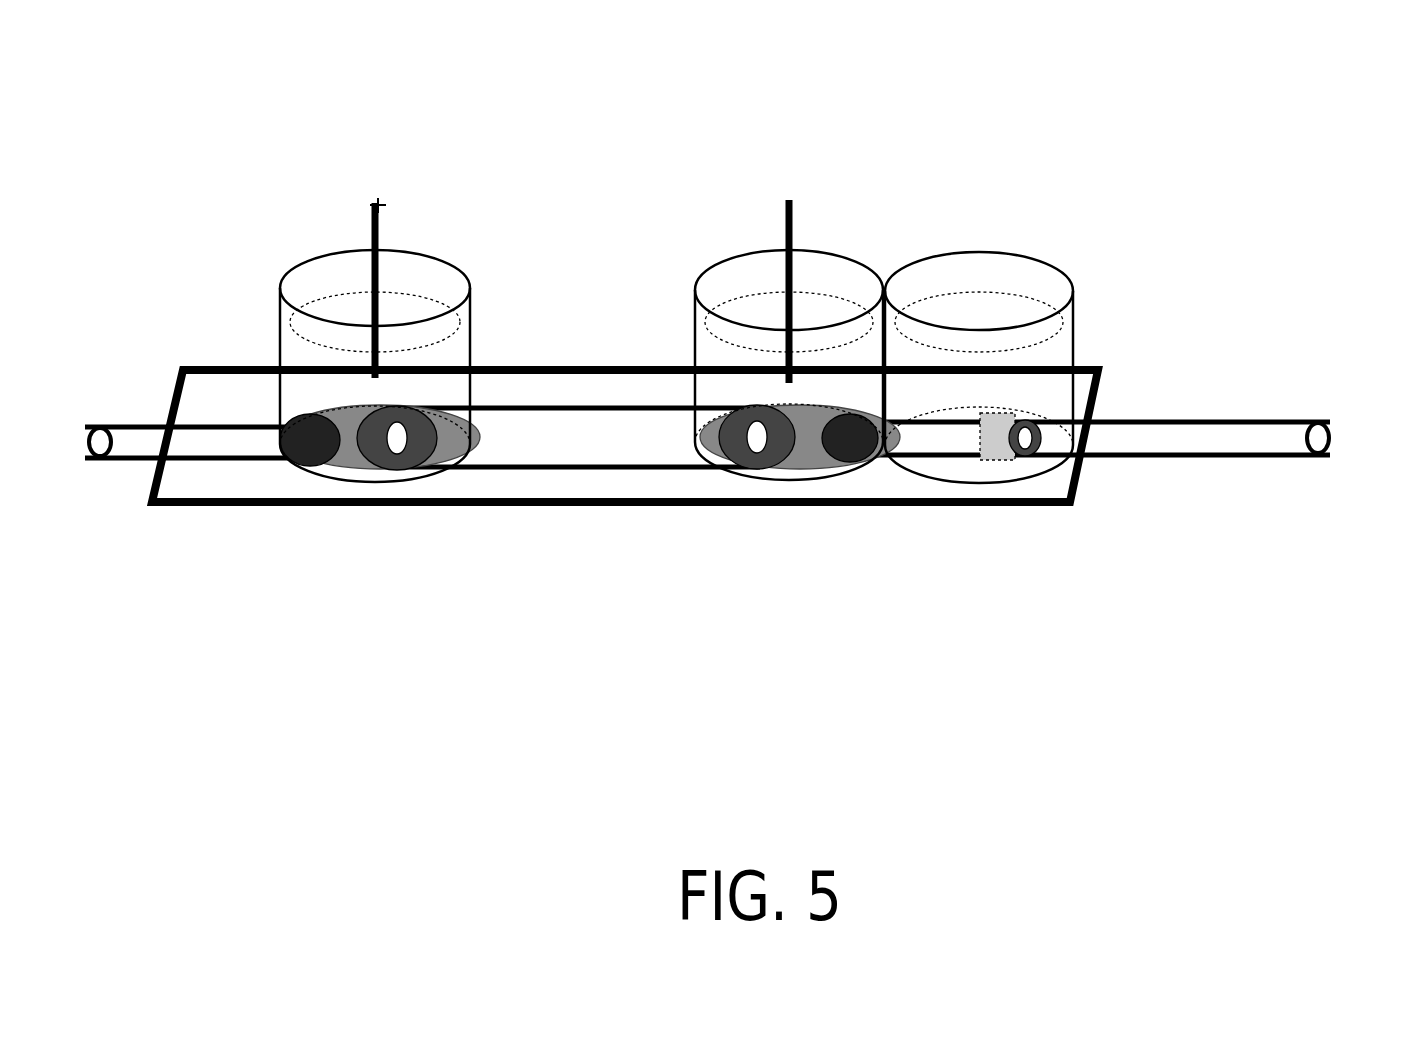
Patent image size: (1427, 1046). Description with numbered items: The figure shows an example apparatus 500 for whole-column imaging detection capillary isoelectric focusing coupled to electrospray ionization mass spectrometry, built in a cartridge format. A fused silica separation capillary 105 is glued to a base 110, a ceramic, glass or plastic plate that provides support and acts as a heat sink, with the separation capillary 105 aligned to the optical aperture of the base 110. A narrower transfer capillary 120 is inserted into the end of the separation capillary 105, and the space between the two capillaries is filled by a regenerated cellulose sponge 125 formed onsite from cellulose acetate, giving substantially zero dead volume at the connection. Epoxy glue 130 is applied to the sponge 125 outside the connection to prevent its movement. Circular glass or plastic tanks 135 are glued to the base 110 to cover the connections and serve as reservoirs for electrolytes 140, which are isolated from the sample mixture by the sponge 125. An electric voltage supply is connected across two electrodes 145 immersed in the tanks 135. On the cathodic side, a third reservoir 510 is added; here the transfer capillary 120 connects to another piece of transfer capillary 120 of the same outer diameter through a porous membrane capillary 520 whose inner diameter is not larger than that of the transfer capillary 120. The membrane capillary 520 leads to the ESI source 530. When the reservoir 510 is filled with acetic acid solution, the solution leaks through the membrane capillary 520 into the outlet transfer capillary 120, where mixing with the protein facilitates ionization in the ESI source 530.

The separation capillary 105 is at (572, 450).
The base 110 is at (443, 508).
The outlet transfer capillary 120 is at (792, 478).
The regenerated cellulose sponge 125 is at (891, 700).
The epoxy glue 130 is at (278, 408).
The tank 135 is at (294, 255).
The electrolyte 140 is at (440, 386).
The electrode 145 is at (589, 233).
The apparatus 500 is at (1211, 178).
The third reservoir 510 is at (979, 315).
The membrane capillary 520 is at (1008, 466).
The ESI source 530 is at (1382, 468).